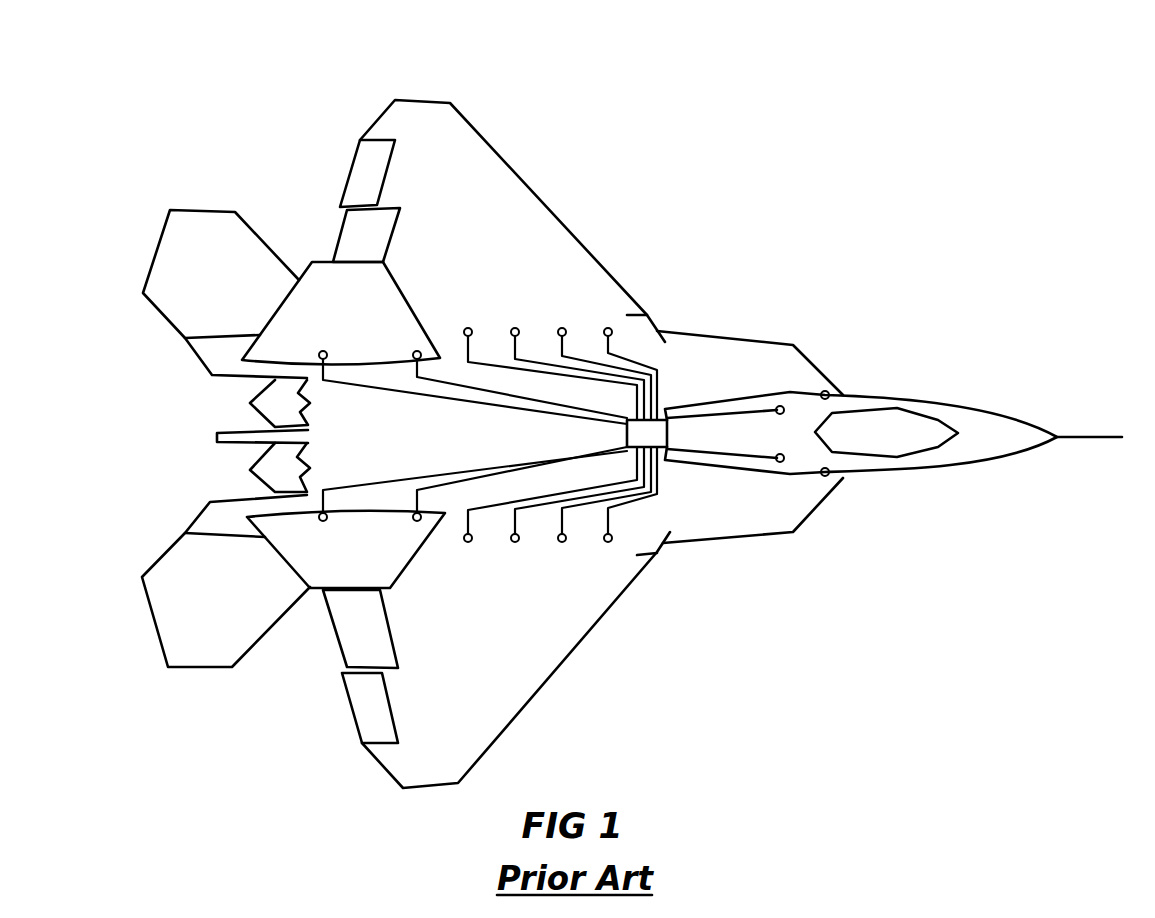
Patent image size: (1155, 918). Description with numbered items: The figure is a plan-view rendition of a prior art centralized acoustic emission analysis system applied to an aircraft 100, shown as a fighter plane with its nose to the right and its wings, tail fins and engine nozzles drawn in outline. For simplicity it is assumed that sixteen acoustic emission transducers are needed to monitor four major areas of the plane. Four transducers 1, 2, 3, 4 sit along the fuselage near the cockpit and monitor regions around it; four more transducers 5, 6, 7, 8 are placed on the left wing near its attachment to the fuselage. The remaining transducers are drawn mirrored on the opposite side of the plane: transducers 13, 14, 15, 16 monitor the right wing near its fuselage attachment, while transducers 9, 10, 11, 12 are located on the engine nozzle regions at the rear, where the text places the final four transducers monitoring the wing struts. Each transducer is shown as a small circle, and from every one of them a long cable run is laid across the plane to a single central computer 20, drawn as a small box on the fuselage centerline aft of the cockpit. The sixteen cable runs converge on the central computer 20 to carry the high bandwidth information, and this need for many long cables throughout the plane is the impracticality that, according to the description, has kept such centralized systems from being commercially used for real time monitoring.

The aircraft 100 is at (811, 202).
The central computer 20 is at (667, 432).
The acoustic emission transducer 1 is at (781, 406).
The acoustic emission transducer 2 is at (827, 391).
The acoustic emission transducer 3 is at (827, 476).
The acoustic emission transducer 4 is at (781, 462).
The acoustic emission transducer 5 is at (606, 328).
The acoustic emission transducer 6 is at (560, 328).
The acoustic emission transducer 7 is at (514, 328).
The acoustic emission transducer 8 is at (467, 328).
The acoustic emission sensor 9 is at (323, 351).
The acoustic emission sensor 10 is at (416, 351).
The acoustic emission sensor 11 is at (324, 521).
The acoustic emission sensor 12 is at (416, 521).
The acoustic emission sensor 13 is at (467, 542).
The acoustic emission sensor 14 is at (514, 542).
The acoustic emission sensor 15 is at (560, 542).
The acoustic emission sensor 16 is at (607, 542).